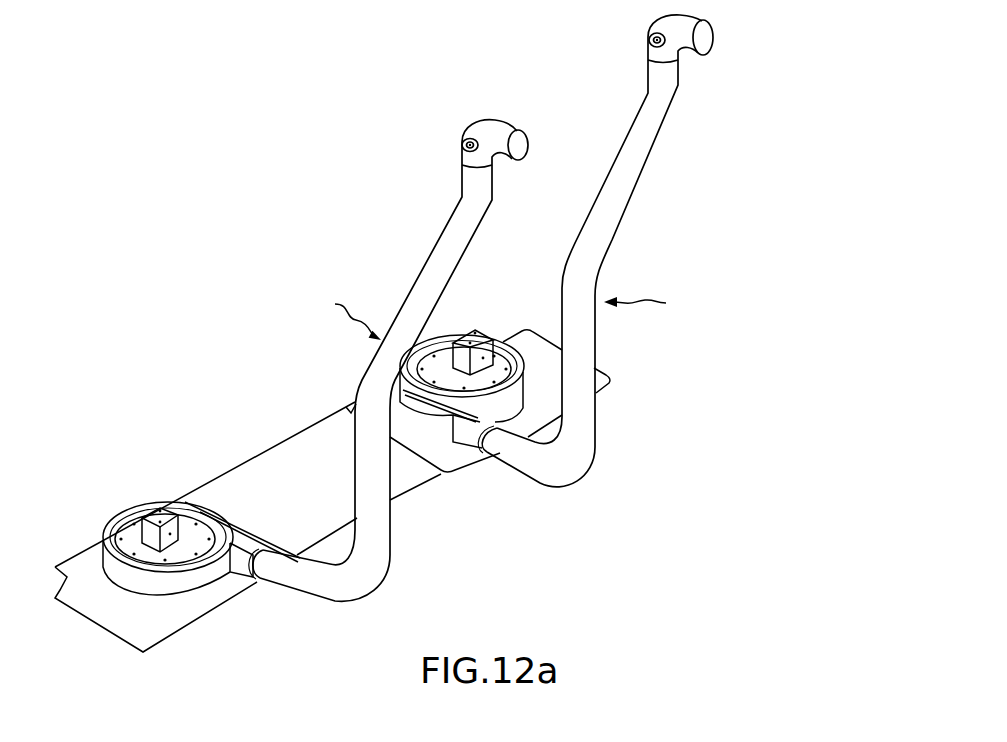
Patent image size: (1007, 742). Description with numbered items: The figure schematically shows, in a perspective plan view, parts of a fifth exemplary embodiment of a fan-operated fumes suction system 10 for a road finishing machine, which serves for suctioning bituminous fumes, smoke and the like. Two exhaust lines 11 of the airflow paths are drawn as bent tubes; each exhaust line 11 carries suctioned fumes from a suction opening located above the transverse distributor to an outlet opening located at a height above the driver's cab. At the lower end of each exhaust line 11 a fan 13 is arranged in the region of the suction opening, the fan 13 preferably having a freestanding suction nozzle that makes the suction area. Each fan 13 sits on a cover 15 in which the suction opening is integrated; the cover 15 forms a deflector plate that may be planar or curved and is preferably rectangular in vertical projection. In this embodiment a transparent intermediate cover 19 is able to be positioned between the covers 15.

The fumes suction system 10 is at (373, 232).
The exhaust line 11 is at (463, 240).
The fan 13 is at (503, 350).
The cover 15 is at (598, 382).
The transparent intermediate cover 19 is at (283, 457).